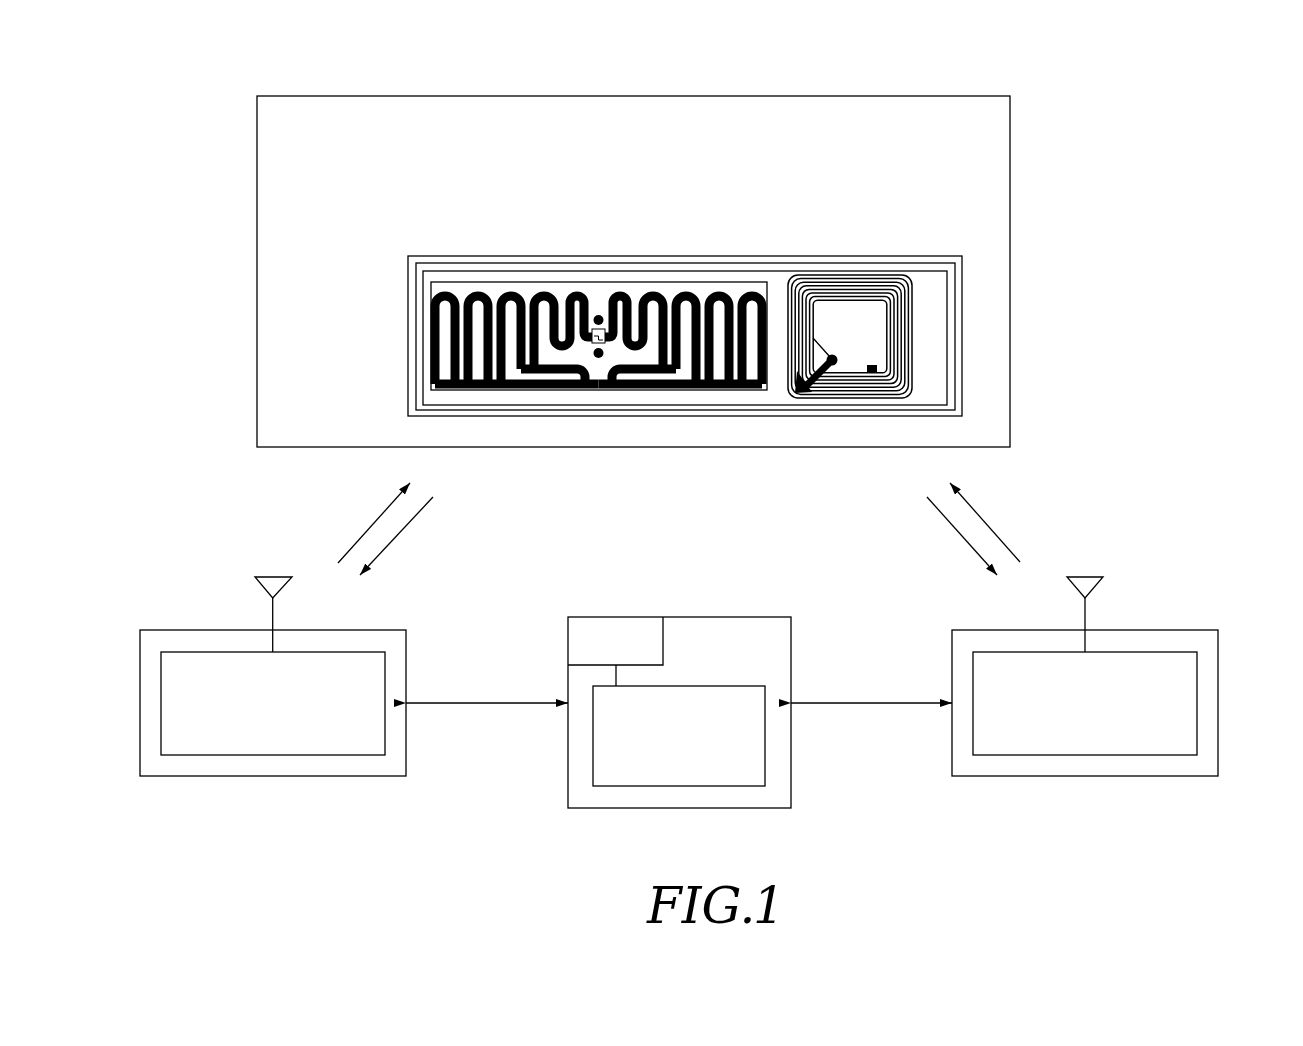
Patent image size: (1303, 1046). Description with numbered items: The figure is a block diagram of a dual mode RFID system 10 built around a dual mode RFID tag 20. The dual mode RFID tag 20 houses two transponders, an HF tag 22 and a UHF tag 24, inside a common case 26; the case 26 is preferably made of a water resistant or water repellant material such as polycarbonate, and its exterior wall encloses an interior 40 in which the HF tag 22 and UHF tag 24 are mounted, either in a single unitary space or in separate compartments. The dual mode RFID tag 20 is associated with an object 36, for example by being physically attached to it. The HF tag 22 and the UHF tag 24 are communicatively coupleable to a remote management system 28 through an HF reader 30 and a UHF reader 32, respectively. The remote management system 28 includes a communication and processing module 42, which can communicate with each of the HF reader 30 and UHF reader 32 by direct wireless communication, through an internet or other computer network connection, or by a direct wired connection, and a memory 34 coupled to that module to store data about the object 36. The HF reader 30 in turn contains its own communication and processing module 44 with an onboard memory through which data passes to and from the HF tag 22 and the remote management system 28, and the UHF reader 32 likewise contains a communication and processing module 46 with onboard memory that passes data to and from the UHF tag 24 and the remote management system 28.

The dual mode RFID system 10 is at (1105, 99).
The dual mode RFID tag 20 is at (954, 252).
The HF tag 22 is at (916, 366).
The UHF tag 24 is at (424, 286).
The case 26 is at (964, 285).
The remote management system 28 is at (708, 675).
The HF reader 30 is at (1121, 674).
The UHF reader 32 is at (291, 674).
The memory 34 is at (604, 628).
The object 36 is at (250, 122).
The interior 40 is at (926, 328).
The communication and processing module 42 is at (765, 760).
The communication and processing module 44 is at (1197, 742).
The communication and processing module 46 is at (385, 742).